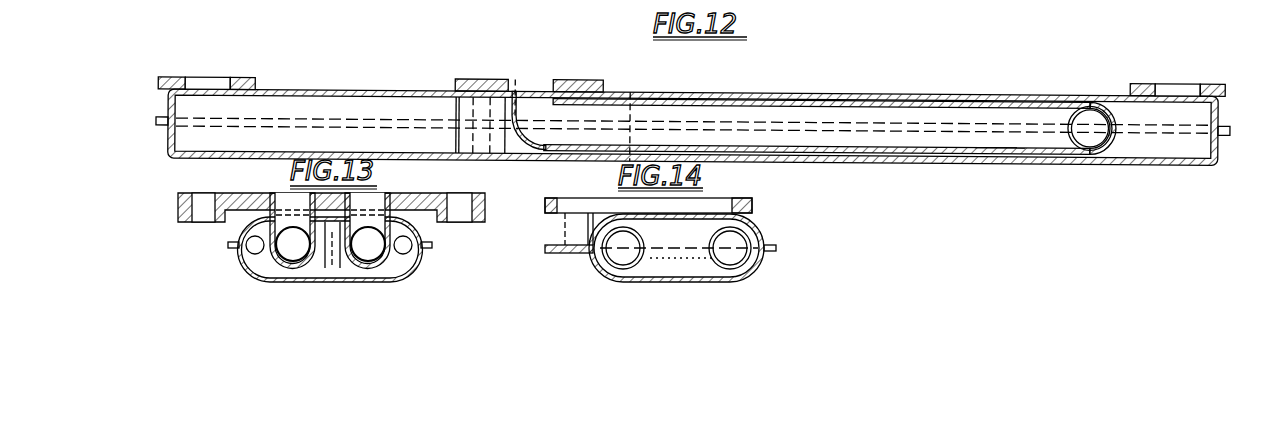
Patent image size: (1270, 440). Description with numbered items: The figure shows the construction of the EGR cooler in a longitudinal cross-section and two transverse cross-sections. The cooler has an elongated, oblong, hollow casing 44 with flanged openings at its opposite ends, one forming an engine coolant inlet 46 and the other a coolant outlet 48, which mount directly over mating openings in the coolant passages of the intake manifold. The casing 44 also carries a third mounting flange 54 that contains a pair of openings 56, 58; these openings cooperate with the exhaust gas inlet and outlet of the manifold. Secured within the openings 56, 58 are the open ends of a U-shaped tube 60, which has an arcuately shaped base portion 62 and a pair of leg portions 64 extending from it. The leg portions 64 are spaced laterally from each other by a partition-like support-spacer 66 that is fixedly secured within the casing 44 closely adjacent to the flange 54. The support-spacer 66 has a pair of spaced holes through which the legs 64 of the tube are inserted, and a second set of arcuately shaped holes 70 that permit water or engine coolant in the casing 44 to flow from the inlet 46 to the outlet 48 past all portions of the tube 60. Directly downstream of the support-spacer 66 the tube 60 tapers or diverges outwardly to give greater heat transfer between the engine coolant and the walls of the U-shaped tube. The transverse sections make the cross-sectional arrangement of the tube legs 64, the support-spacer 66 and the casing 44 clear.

In FIG. 12, the hollow casing 44 is at (965, 95).
In FIG. 12, the engine coolant inlet 46 is at (207, 80).
In FIG. 12, the coolant outlet 48 is at (1175, 93).
In FIG. 13, the third mounting flange 54 is at (478, 199).
In FIG. 14, the third mounting flange 54 is at (648, 225).
In FIG. 13, the opening 56 is at (292, 205).
In FIG. 13, the opening 58 is at (372, 205).
In FIG. 12, the U-shaped tube 60 is at (763, 120).
In FIG. 13, the U-shaped tube 60 is at (445, 251).
In FIG. 14, the U-shaped tube 60 is at (765, 228).
In FIG. 12, the arcuately shaped base portion 62 is at (1043, 127).
In FIG. 14, the arcuately shaped base portion 62 is at (693, 262).
In FIG. 12, the leg portions 64 is at (998, 137).
In FIG. 13, the leg portions 64 is at (297, 255).
In FIG. 14, the leg portions 64 is at (620, 255).
In FIG. 12, the support-spacer 66 is at (633, 97).
In FIG. 13, the support-spacer 66 is at (340, 267).
In FIG. 13, the arcuately shaped holes 70 is at (250, 258).